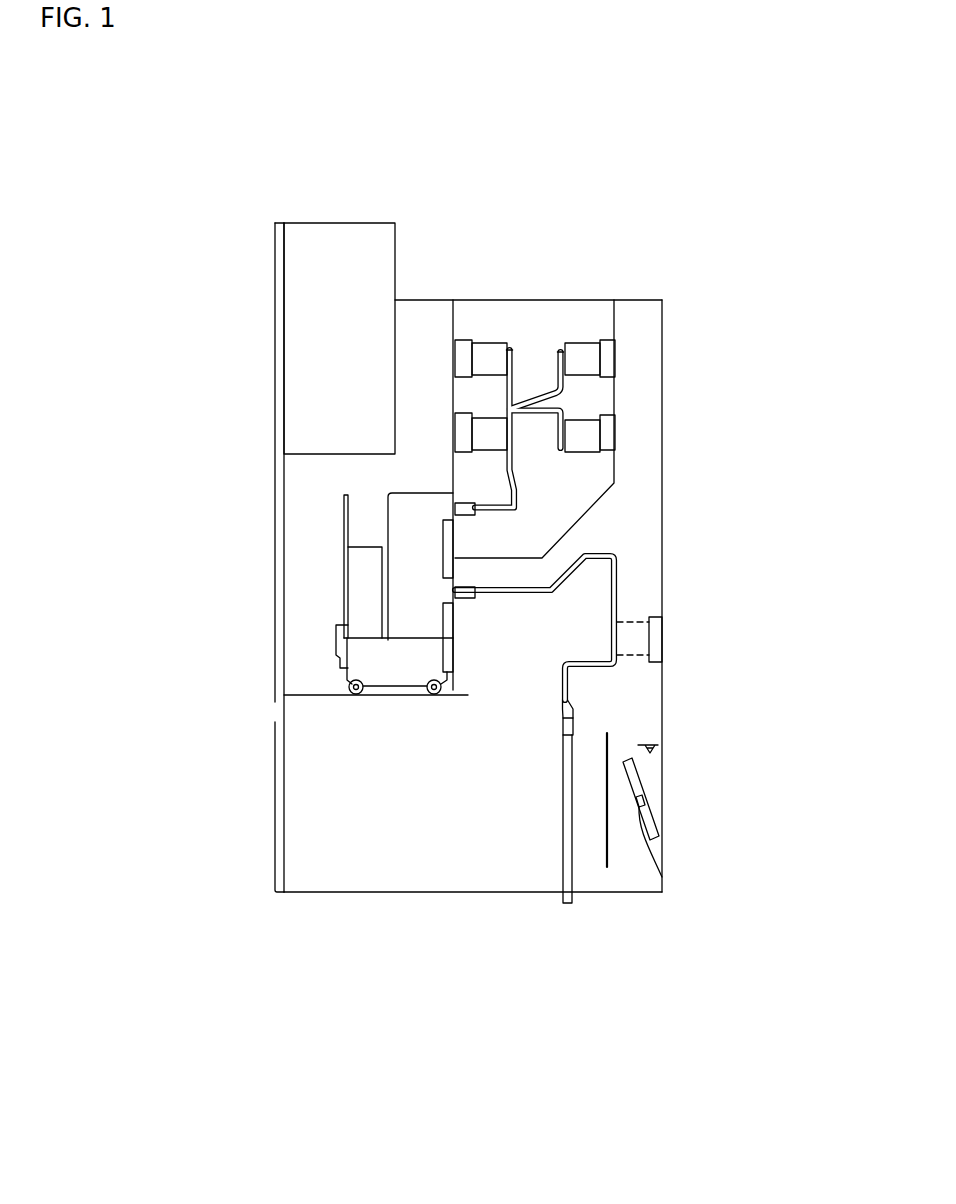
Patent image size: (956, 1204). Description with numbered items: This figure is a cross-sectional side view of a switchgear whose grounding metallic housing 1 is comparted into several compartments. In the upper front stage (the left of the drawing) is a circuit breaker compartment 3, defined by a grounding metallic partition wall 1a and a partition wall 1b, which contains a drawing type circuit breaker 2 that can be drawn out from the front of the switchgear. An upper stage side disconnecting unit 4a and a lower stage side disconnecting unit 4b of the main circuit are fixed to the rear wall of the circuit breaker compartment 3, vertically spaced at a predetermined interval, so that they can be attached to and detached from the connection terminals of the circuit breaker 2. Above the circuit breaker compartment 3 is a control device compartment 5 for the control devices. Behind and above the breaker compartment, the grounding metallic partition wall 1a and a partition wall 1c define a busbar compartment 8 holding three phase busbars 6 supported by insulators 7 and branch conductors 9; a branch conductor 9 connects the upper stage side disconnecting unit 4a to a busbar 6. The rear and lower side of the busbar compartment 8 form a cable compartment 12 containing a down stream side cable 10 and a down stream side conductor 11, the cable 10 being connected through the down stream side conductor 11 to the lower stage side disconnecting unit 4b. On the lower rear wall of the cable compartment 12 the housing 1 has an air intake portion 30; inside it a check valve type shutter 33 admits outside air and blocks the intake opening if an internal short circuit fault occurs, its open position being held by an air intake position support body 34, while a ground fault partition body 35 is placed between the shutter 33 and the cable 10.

The grounding metallic housing 1 is at (662, 325).
The grounding metallic partition wall 1a is at (452, 327).
The partition wall 1b is at (320, 697).
The partition wall 1c is at (588, 515).
The drawing type circuit breaker 2 is at (358, 583).
The circuit breaker compartment 3 is at (307, 513).
The upper stage side disconnecting unit 4a is at (462, 510).
The lower stage side disconnecting unit 4b is at (463, 588).
The control device compartment 5 is at (335, 315).
The busbar 6 is at (507, 350).
The insulator 7 is at (482, 352).
The busbar compartment 8 is at (545, 477).
The branch conductor 9 is at (512, 390).
The cable 10 is at (567, 823).
The down stream side conductor 11 is at (615, 578).
The cable compartment 12 is at (507, 790).
The air intake portion 30 is at (662, 782).
The check valve type shutter 33 is at (657, 817).
The air intake position support body 34 is at (607, 822).
The ground fault partition body 35 is at (662, 877).